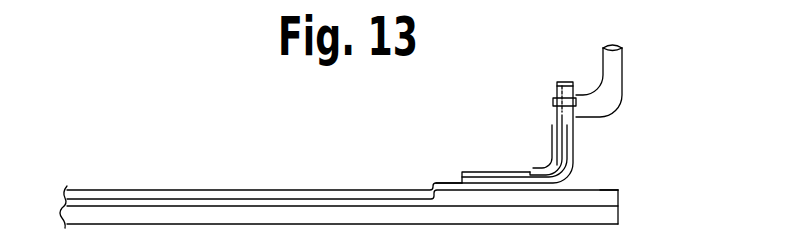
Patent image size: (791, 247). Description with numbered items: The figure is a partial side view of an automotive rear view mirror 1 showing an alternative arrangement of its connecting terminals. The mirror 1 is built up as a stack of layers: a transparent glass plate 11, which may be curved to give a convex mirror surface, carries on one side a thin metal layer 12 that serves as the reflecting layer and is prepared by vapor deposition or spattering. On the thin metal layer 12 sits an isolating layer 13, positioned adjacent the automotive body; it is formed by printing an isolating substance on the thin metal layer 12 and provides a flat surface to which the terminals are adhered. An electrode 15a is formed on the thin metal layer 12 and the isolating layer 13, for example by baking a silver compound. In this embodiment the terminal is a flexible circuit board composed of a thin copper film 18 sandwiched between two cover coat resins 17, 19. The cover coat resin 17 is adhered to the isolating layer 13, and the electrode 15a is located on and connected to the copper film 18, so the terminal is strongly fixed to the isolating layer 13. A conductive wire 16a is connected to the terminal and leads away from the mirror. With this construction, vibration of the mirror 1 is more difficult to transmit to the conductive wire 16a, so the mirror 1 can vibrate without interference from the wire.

The mirror 1 is at (325, 124).
The glass plate 11 is at (292, 213).
The thin metal layer 12 is at (230, 202).
The isolating layer 13 is at (607, 188).
The electrode 15a is at (150, 190).
The conductive wire 16a is at (618, 86).
The cover coat resin 17 is at (568, 130).
The thin copper film 18 is at (563, 147).
The cover coat resin 19 is at (549, 158).